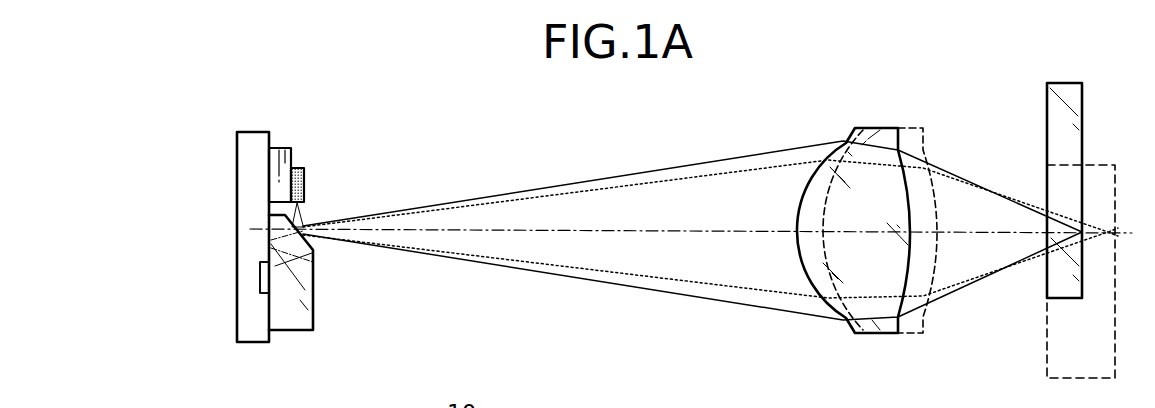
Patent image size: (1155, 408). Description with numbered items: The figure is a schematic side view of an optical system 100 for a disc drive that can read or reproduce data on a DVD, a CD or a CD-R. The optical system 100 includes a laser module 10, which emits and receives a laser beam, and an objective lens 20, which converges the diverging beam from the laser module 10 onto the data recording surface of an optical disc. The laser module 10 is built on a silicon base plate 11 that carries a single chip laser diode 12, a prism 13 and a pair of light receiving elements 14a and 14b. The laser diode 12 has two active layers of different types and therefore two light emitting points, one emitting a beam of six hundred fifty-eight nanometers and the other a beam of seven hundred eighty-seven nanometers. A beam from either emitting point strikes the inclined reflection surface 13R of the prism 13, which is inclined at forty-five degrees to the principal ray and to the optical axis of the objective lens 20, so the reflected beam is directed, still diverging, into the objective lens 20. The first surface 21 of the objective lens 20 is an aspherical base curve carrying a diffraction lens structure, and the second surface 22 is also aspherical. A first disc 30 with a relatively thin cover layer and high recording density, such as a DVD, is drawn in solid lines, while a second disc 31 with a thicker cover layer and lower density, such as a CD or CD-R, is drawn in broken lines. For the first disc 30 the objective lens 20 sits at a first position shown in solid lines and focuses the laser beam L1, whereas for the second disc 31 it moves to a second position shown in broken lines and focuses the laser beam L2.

The optical system 100 is at (444, 128).
The laser module 10 is at (259, 237).
The silicon base plate 11 is at (245, 321).
The single chip laser diode 12 is at (306, 180).
The prism 13 is at (308, 318).
The inclined reflection surface 13R is at (314, 244).
The light receiving element 14a is at (259, 273).
The light receiving element 14b is at (193, 276).
The laser beam L1 is at (540, 274).
The laser beam L2 is at (630, 275).
The objective lens 20 is at (878, 265).
The first surface 21 is at (825, 300).
The second surface 22 is at (918, 310).
The first disc 30 is at (1078, 108).
The second disc 31 is at (1105, 333).